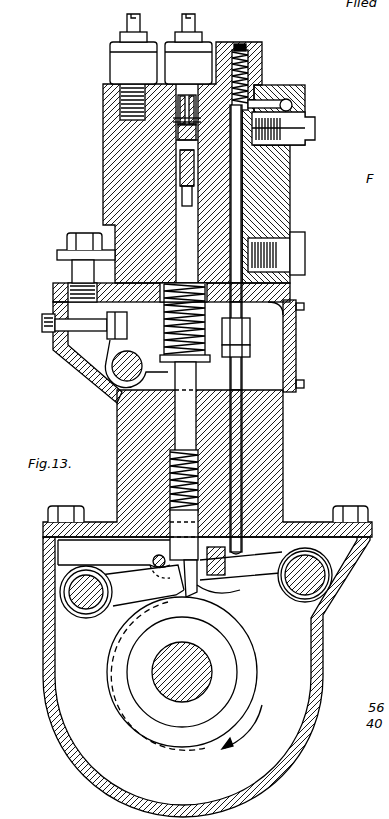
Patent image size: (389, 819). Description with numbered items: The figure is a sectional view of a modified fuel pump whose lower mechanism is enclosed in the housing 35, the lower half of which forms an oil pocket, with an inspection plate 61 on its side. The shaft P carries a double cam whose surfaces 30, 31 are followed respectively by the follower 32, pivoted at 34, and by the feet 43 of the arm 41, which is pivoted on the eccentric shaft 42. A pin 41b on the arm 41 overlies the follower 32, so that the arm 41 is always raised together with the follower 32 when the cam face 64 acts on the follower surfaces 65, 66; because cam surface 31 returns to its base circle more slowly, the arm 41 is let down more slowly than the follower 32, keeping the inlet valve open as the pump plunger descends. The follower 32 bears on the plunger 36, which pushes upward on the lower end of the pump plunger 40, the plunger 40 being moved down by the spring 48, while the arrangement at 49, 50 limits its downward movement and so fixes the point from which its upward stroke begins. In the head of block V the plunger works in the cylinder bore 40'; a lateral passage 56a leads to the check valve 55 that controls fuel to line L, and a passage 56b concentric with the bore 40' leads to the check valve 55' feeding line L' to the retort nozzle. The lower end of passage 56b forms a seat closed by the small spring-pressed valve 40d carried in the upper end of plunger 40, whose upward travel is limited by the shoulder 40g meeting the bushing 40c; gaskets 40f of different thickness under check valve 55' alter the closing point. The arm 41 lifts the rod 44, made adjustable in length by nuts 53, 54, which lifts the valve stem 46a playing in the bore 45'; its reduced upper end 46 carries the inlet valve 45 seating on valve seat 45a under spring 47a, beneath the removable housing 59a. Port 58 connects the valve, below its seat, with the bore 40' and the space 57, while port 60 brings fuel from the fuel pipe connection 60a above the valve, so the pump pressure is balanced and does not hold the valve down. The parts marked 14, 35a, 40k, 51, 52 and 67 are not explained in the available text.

The section line 14- 14 is at (60, 668).
The cam surface 30 is at (106, 666).
The cam surface 31 is at (104, 658).
The follower 32 is at (142, 585).
The pivot 34 is at (84, 604).
The housing 35 is at (330, 626).
The pump body 35a is at (292, 474).
The plunger 36 is at (186, 396).
The pump plunger 40 is at (187, 183).
The plunger bore 40' is at (278, 329).
The bushing 40c is at (182, 152).
The spring pressed valve 40d is at (178, 134).
The gasket 40f is at (222, 46).
The shoulder 40g is at (184, 168).
The plunger bore 40k is at (170, 188).
The valve lifting arm 41 is at (241, 566).
The pin 41b is at (153, 558).
The eccentric shaft 42 is at (333, 585).
The feet 43 is at (178, 592).
The rod 44 is at (240, 393).
The inlet valve 45 is at (279, 108).
The bore 45' is at (304, 198).
The valve seat 45a is at (304, 147).
The reduced upper end 46 is at (103, 164).
The valve stem 46a is at (292, 240).
The spring 47a is at (263, 62).
The spring 48 is at (164, 321).
The stop arrangement 49 is at (114, 402).
The stop arrangement 50 is at (88, 386).
The pivot pin 51 is at (36, 331).
The bracket 52 is at (58, 340).
The nut 53 is at (250, 328).
The nut 54 is at (250, 352).
The check valve 55 is at (133, 49).
The check valve 55' is at (188, 49).
The passage 56a is at (176, 124).
The passage 56b is at (174, 78).
The space 57 is at (316, 133).
The inlet port 58 is at (282, 160).
The removable housing 59a is at (263, 48).
The port 60 is at (296, 90).
The fuel pipe connection 60a is at (294, 104).
The inspection plate 61 is at (297, 362).
The cam surface 64 is at (203, 608).
The follower surface 65 is at (186, 596).
The follower surface 66 is at (197, 595).
The eccentric hub ring 67 is at (190, 620).
The shaft P is at (212, 668).
The block V is at (100, 108).
The lead L is at (111, 20).
The lead L' is at (204, 20).